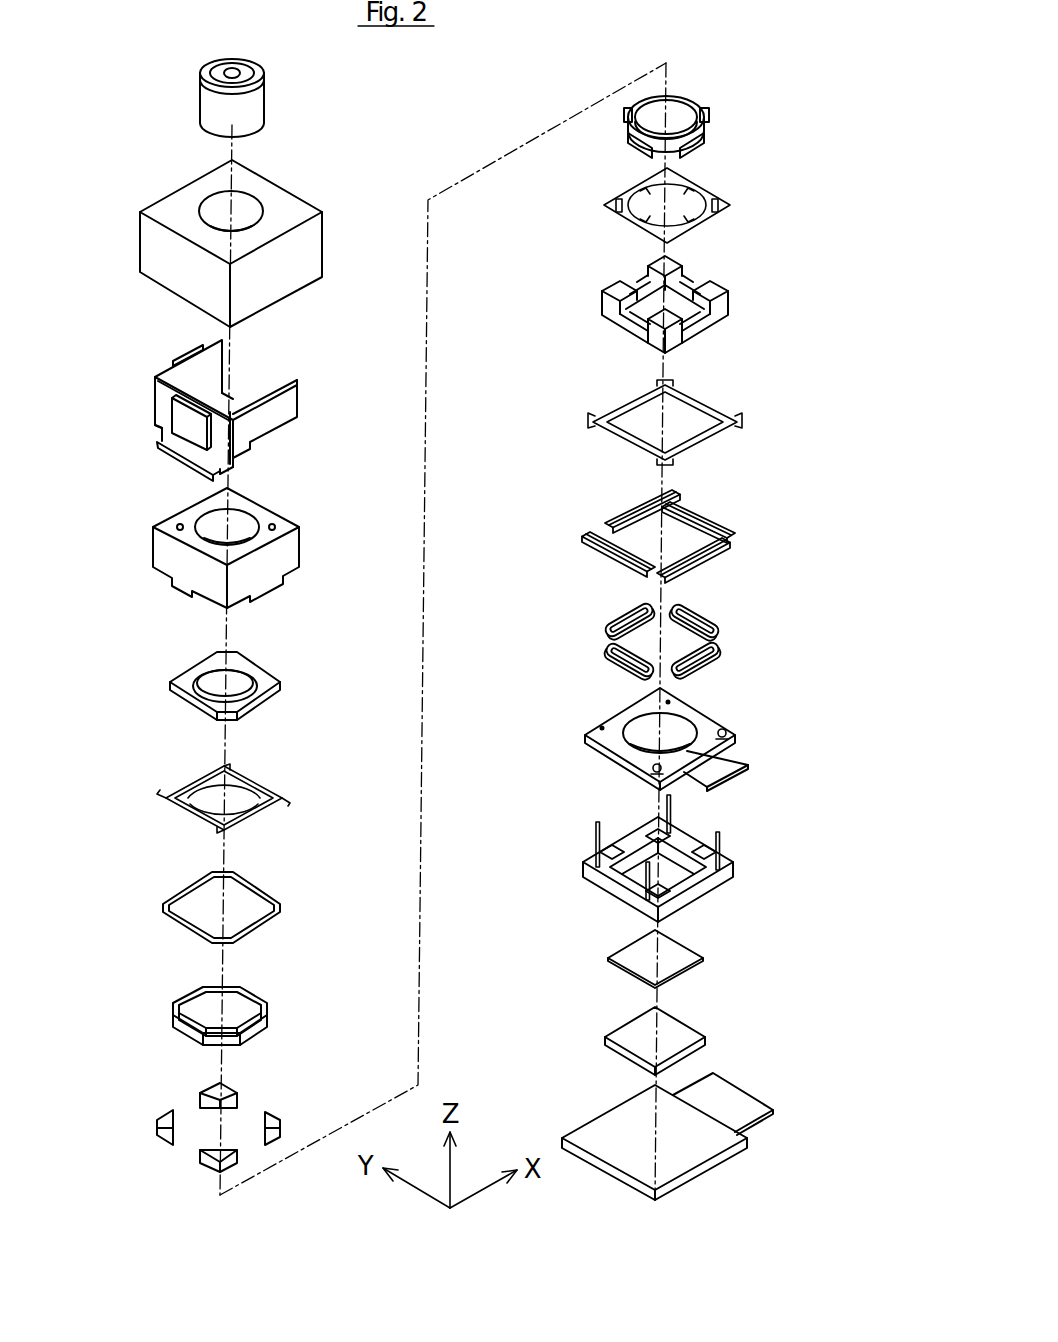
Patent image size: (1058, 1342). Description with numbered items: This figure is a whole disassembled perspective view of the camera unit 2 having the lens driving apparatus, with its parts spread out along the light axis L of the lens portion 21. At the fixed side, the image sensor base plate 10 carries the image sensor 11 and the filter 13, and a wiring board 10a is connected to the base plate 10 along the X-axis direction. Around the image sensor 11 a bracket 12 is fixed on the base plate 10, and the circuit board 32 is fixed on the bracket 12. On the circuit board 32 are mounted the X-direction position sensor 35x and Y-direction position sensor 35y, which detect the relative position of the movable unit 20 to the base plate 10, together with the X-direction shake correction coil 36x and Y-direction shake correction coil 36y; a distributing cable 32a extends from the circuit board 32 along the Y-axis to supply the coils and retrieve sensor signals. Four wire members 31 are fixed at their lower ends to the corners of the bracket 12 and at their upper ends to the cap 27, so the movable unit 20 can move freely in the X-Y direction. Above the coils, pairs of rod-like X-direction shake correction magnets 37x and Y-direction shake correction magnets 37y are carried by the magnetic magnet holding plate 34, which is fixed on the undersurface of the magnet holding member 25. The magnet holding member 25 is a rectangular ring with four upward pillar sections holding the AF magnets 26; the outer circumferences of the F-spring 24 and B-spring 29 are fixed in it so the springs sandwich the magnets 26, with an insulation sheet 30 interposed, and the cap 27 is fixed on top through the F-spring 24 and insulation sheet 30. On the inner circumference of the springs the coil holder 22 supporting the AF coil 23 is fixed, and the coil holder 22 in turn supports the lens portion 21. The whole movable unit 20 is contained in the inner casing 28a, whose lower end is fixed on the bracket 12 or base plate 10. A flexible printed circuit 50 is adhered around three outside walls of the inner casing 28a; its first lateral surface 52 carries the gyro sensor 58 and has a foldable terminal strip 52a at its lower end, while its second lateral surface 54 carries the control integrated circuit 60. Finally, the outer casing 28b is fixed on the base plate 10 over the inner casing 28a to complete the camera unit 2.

The camera unit 2 is at (346, 193).
The light axis L is at (234, 140).
The lens portion 21 is at (205, 100).
The outer casing 28b is at (178, 205).
The flexible printed circuit 50 is at (220, 393).
The control integrated circuit 60 is at (185, 353).
The second lateral surface 54 is at (273, 410).
The gyro sensor 58 is at (178, 407).
The first lateral surface 52 is at (155, 420).
The terminal strip 52a is at (172, 458).
The inner casing 28a is at (265, 512).
The cap 27 is at (262, 678).
The F-spring 24 is at (258, 790).
The insulation sheet 30 is at (255, 888).
The AF coil 23 is at (250, 995).
The AF magnets 26 is at (225, 1085).
The movable unit 20 is at (133, 678).
The coil holder 22 is at (632, 135).
The B-spring 29 is at (618, 208).
The magnet holding member 25 is at (618, 312).
The magnet holding plate 34 is at (633, 440).
The Y-direction shake correction magnet 37y is at (627, 512).
The X-direction shake correction magnet 37x is at (700, 510).
The Y-direction shake correction coil 36y is at (630, 620).
The X-direction shake correction coil 36x is at (700, 625).
The circuit board 32 is at (672, 727).
The X-direction position sensor 35x is at (723, 729).
The Y-direction position sensor 35y is at (650, 770).
The distributing cable 32a is at (715, 767).
The bracket 12 is at (700, 893).
The wire member 31 is at (672, 805).
The filter 13 is at (630, 952).
The image sensor 11 is at (630, 1028).
The image sensor base plate 10 is at (654, 1114).
The wiring board 10a is at (720, 1100).